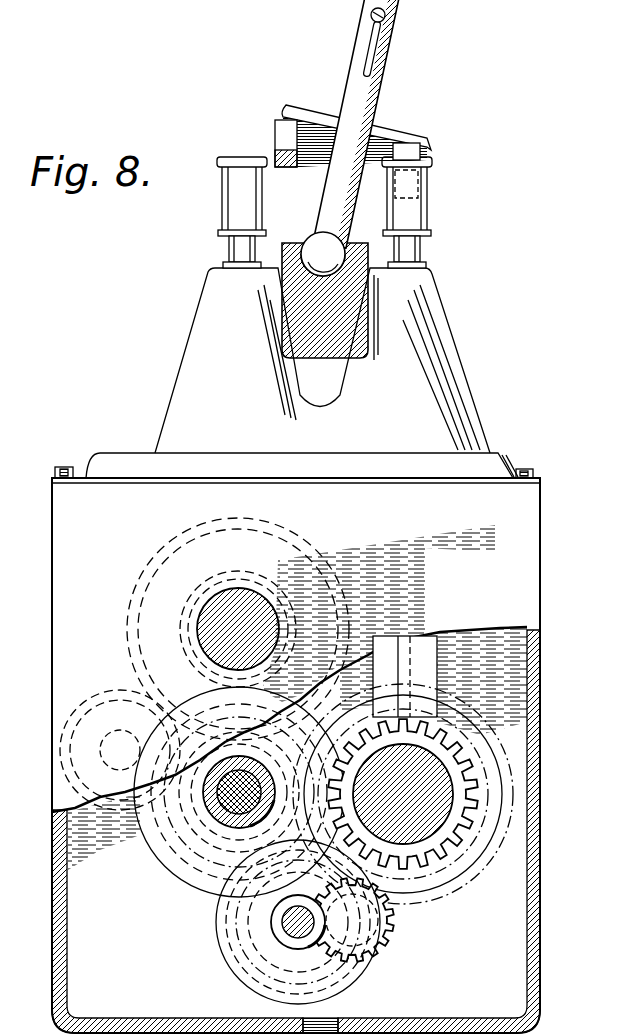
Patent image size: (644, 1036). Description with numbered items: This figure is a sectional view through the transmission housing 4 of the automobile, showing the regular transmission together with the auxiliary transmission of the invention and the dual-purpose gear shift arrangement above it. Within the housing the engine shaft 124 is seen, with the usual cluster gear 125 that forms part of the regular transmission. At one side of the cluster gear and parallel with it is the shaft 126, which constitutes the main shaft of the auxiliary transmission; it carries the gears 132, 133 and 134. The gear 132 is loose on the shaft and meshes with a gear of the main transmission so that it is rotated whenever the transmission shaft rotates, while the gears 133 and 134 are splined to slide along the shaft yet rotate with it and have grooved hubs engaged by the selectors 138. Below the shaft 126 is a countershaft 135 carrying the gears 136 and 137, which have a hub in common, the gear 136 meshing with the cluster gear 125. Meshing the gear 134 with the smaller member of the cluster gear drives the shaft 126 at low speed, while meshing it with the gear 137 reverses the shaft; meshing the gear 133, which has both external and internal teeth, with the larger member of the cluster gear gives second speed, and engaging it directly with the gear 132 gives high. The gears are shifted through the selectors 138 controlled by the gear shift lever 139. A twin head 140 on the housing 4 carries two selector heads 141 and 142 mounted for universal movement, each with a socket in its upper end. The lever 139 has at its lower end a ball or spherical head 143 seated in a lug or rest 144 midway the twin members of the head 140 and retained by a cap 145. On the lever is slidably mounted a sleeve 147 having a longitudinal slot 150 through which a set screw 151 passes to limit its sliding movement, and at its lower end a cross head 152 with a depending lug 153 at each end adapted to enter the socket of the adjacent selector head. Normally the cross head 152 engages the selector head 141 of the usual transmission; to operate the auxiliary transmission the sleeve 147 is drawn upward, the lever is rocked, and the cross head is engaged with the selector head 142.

The transmission housing 4 is at (296, 743).
The engine shaft 124 is at (250, 600).
The cluster gear 125 is at (190, 850).
The shaft 126 is at (430, 797).
The gear 132 is at (435, 845).
The gear 133 is at (480, 765).
The gear 134 is at (497, 733).
The countershaft 135 is at (282, 930).
The gear 136 is at (388, 946).
The gear 137 is at (372, 918).
The selectors 138 is at (430, 660).
The gear shift lever 139 is at (345, 192).
The twin head 140 is at (198, 362).
The selector head 141 is at (236, 200).
The selector head 142 is at (418, 228).
The ball or spherical head 143 is at (333, 262).
The lug or rest 144 is at (307, 330).
The cap 145 is at (312, 234).
The sleeve 147 is at (378, 92).
The longitudinal slot 150 is at (374, 53).
The set screw 151 is at (368, 18).
The cross head 152 is at (402, 138).
The depending lug 153 is at (283, 138).